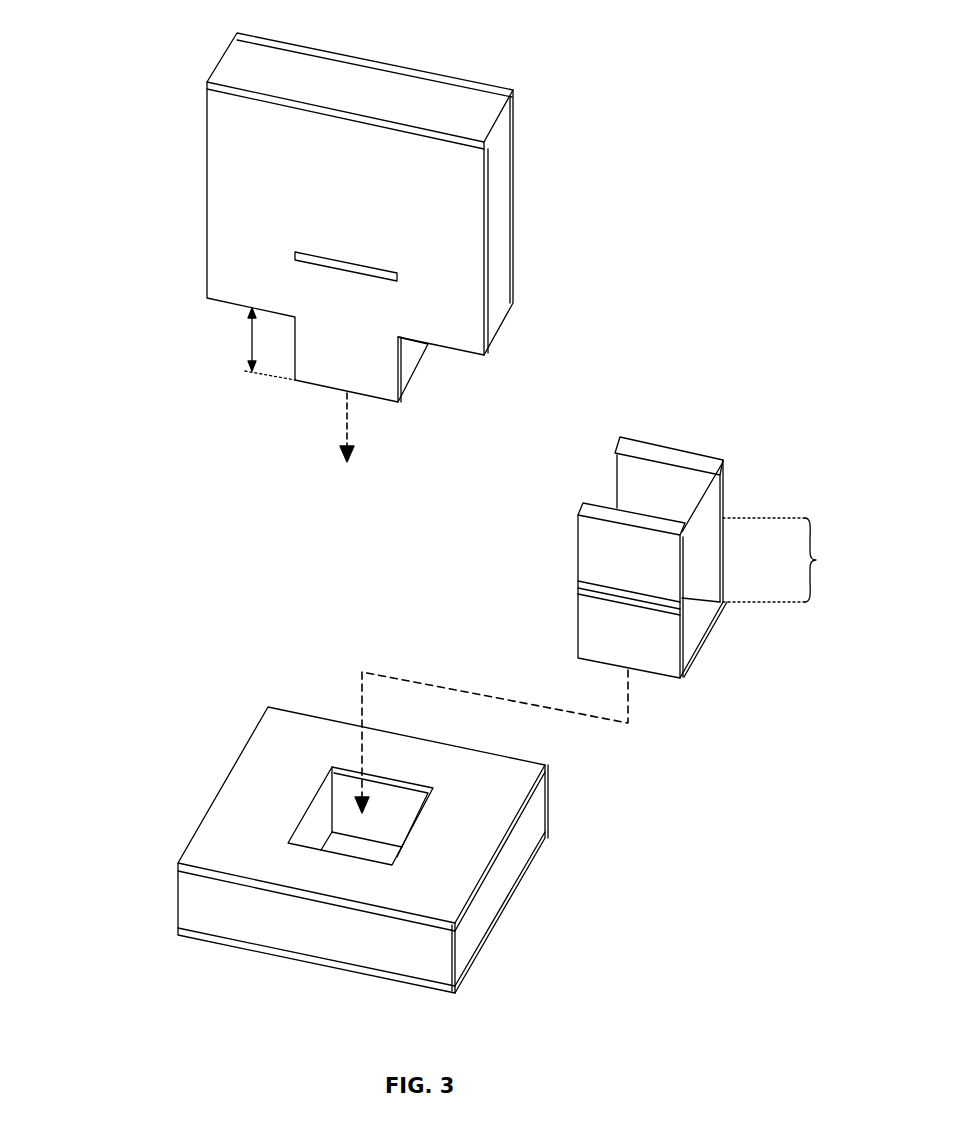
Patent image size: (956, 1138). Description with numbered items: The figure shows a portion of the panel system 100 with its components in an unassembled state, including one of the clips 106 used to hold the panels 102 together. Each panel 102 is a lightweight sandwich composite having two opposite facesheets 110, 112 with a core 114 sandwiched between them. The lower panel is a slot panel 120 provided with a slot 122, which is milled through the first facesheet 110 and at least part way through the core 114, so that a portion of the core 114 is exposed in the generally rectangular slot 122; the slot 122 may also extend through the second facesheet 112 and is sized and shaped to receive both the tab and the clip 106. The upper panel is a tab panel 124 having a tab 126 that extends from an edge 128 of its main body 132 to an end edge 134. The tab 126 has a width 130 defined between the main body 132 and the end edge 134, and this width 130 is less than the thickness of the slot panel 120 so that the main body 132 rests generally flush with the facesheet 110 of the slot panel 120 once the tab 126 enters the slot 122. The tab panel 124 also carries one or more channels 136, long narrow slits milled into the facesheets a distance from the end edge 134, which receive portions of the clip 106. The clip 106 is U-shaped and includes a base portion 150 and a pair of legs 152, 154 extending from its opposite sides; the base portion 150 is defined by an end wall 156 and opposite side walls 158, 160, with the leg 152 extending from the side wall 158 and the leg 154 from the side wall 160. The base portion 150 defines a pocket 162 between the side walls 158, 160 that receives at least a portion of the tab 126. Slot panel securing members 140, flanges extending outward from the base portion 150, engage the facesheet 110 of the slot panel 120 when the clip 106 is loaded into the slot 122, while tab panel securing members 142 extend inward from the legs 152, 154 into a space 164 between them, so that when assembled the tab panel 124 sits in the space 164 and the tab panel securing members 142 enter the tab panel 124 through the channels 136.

The panel system 100 is at (149, 98).
The panel 102 is at (577, 100).
The clip 106 is at (712, 428).
The facesheet 110 is at (488, 243).
The facesheet 112 is at (516, 147).
The core 114 is at (500, 192).
The slot panel 120 is at (178, 889).
The slot 122 is at (320, 826).
The tab panel 124 is at (198, 242).
The tab 126 is at (291, 357).
The edge 128 is at (215, 300).
The width 130 is at (250, 340).
The main body 132 is at (232, 130).
The end edge 134 is at (317, 389).
The channel 136 is at (302, 255).
The slot panel securing member 140 is at (727, 522).
The tab panel securing member 142 is at (617, 455).
The base portion 150 is at (791, 560).
The leg 152 is at (685, 528).
The leg 154 is at (723, 503).
The end wall 156 is at (697, 622).
The side wall 158 is at (683, 652).
The side wall 160 is at (727, 582).
The pocket 162 is at (693, 610).
The space 164 is at (692, 565).